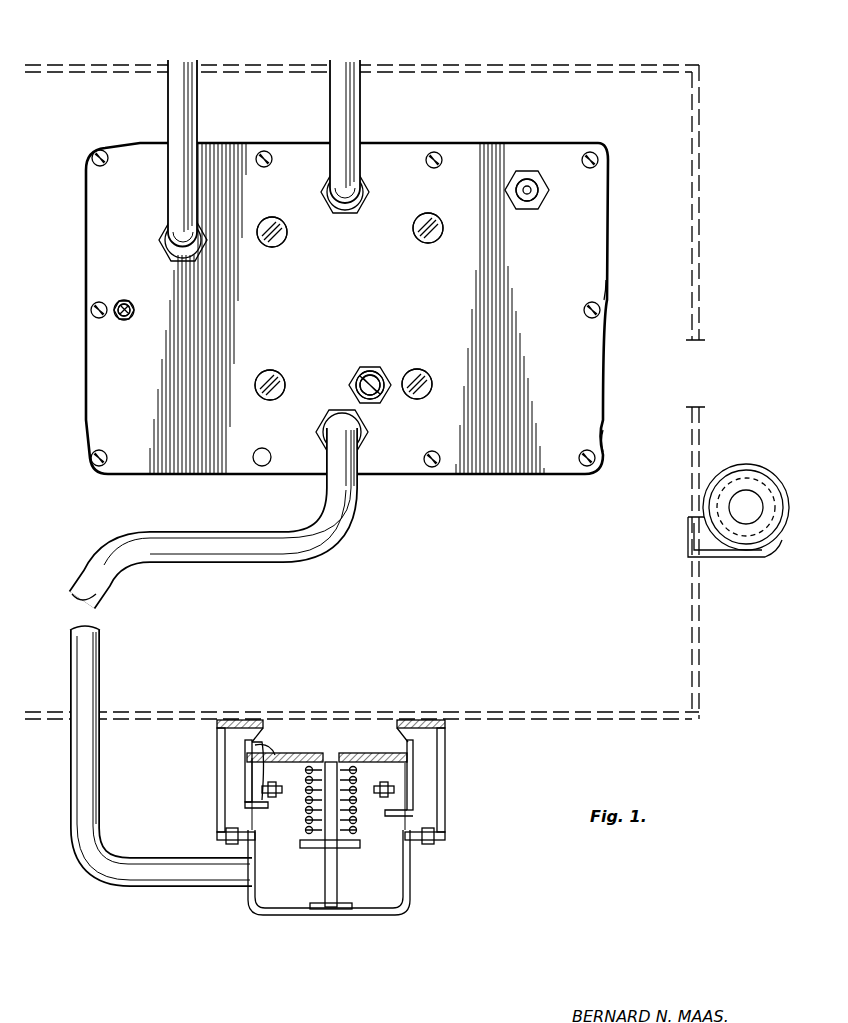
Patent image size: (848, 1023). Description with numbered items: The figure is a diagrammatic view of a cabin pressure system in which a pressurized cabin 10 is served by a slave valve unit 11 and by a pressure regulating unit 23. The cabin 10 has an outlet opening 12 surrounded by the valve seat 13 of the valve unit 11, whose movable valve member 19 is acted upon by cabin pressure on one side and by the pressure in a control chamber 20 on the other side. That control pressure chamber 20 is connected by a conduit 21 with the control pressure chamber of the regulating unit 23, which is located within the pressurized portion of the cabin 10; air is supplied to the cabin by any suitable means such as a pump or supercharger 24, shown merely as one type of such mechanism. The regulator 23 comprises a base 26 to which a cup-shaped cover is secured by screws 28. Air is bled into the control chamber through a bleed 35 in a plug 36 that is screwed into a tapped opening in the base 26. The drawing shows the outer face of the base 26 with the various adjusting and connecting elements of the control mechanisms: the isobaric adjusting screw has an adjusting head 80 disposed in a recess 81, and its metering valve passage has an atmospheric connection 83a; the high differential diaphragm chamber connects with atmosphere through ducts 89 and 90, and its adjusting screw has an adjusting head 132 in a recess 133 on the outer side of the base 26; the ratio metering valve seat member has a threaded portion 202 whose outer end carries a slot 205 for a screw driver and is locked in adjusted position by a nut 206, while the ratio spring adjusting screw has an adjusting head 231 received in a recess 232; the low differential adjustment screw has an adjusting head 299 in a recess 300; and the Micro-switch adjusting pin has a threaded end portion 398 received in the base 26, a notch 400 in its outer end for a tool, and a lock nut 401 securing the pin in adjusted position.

The cabin 10 is at (700, 284).
The slave valve unit 11 is at (448, 763).
The outlet opening 12 is at (263, 740).
The valve seat 13 is at (270, 748).
The movable valve member 19 is at (362, 752).
The control pressure chamber 20 is at (380, 406).
The conduit 21 is at (101, 668).
The pressure regulating unit 23 is at (604, 441).
The supercharger 24 is at (775, 478).
The base 26 is at (440, 299).
The screws 28 is at (604, 300).
The bleed 35 is at (527, 195).
The plug 36 is at (540, 176).
The adjusting head 80 is at (425, 243).
The recess 81 is at (420, 216).
The atmospheric connection 83a is at (357, 128).
The duct 89 is at (162, 238).
The duct 90 is at (181, 120).
The adjusting head 132 is at (272, 222).
The recess 133 is at (274, 247).
The threaded portion 202 is at (372, 378).
The slot 205 is at (356, 393).
The nut 206 is at (362, 370).
The adjusting head 231 is at (418, 399).
The recess 232 is at (416, 372).
The adjusting head 299 is at (273, 371).
The recess 300 is at (274, 400).
The threaded end portion 398 is at (132, 305).
The notch 400 is at (128, 318).
The lock nut 401 is at (131, 292).